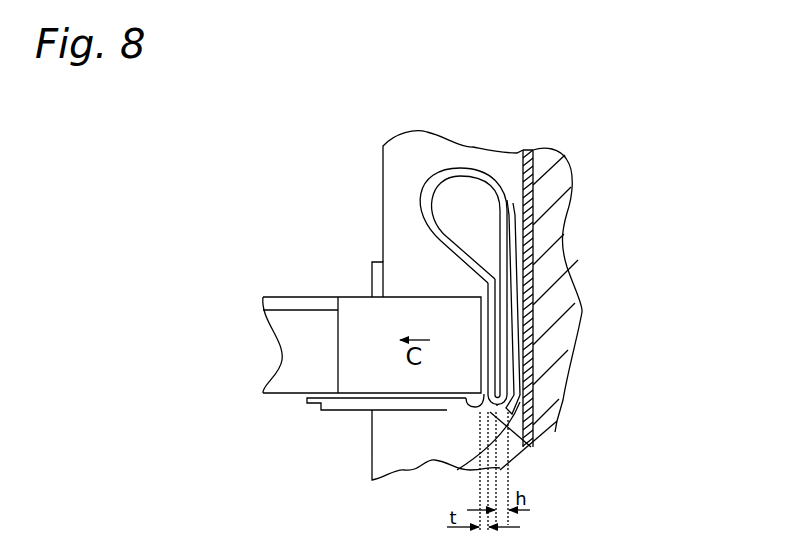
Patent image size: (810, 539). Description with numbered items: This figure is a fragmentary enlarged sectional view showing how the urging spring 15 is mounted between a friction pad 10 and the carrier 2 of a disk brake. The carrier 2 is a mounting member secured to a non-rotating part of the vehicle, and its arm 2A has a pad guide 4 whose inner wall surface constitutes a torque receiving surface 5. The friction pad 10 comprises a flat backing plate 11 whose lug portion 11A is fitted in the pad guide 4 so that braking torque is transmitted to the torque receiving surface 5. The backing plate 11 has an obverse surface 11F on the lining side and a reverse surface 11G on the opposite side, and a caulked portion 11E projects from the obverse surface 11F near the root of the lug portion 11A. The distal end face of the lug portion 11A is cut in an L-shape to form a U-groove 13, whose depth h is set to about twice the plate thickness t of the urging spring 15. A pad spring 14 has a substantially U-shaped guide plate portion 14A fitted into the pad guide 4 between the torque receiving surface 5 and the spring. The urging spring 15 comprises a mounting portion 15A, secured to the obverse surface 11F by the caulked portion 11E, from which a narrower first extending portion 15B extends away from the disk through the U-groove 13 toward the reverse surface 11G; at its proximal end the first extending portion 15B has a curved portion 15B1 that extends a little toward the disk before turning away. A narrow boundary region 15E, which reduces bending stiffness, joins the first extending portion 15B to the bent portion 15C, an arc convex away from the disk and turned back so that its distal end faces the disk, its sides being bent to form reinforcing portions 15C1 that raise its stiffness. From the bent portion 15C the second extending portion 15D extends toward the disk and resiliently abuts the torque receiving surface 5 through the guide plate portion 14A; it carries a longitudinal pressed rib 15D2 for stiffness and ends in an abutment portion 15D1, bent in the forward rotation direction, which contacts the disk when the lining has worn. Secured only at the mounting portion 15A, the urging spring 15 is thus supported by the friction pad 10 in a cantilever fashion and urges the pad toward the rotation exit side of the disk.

The carrier 2 is at (551, 433).
The arm 2A is at (562, 306).
The pad guide 4 is at (507, 160).
The torque receiving surface 5 is at (538, 282).
The friction pad 10 is at (335, 363).
The backing plate 11 is at (331, 330).
The lug portion 11A is at (350, 296).
The caulked portion 11E is at (360, 412).
The obverse surface 11F is at (305, 405).
The reverse surface 11G is at (343, 297).
The U-groove 13 is at (537, 385).
The pad spring 14 is at (584, 277).
The guide plate portion 14A is at (537, 225).
The urging spring 15 is at (485, 302).
The mounting portion 15A is at (456, 406).
The first extending portion 15B is at (487, 357).
The curved portion 15B1 is at (493, 416).
The bent portion 15C is at (476, 167).
The reinforcing portion 15C1 is at (430, 193).
The second extending portion 15D is at (629, 299).
The abutment portion 15D1 is at (527, 411).
The rib 15D2 is at (515, 208).
The boundary region 15E is at (458, 263).